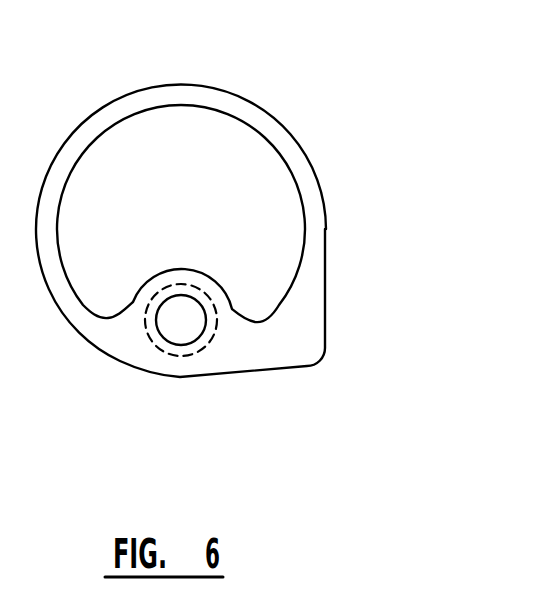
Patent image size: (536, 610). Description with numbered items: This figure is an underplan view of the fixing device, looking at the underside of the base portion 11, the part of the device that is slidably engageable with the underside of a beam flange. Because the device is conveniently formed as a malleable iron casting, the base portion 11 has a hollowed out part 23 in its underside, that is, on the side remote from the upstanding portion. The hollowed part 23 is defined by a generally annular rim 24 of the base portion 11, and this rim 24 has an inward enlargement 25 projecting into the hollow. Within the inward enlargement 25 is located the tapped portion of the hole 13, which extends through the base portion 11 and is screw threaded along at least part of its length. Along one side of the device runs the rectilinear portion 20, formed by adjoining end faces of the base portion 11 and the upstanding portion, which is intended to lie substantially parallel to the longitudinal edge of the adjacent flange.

The base portion 11 is at (322, 232).
The annular rim 24 is at (253, 113).
The hollowed out part 23 is at (185, 215).
The inward enlargement 25 is at (212, 287).
The hole 13 is at (182, 325).
The rectilinear portion 20 is at (250, 370).